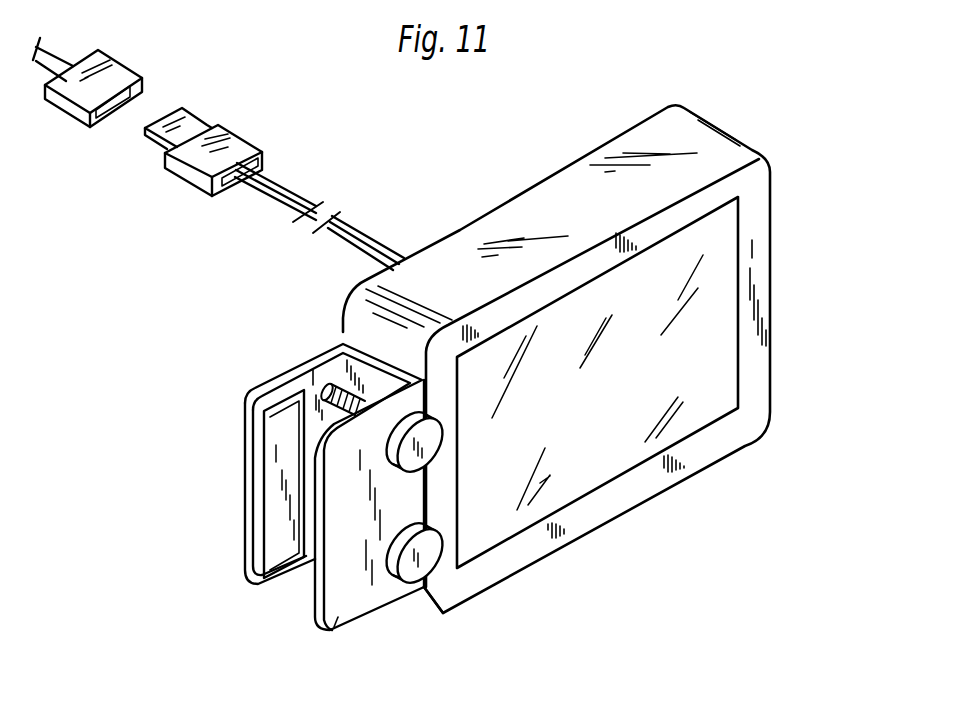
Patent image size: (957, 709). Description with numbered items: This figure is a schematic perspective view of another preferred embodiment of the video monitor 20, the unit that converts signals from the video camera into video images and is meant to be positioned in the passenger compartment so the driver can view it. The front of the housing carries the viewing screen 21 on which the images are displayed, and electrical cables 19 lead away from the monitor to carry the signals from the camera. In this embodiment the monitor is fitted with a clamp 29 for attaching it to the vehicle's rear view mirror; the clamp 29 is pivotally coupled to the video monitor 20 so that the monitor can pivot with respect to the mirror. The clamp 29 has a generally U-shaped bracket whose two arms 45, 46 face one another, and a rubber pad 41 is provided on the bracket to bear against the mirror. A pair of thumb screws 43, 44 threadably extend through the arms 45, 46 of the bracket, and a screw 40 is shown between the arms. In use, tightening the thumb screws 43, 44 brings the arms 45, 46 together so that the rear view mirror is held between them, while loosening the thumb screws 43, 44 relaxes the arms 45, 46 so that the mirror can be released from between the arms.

The electrical cables 19 is at (308, 196).
The video monitor 20 is at (722, 112).
The viewing screen 21 is at (725, 300).
The clamp 29 is at (301, 489).
The clamping screw 40 is at (318, 350).
The rubber pad 41 is at (288, 553).
The thumb screw 43 is at (420, 455).
The thumb screw 44 is at (422, 566).
The arm 45 is at (249, 407).
The arm 46 is at (333, 630).